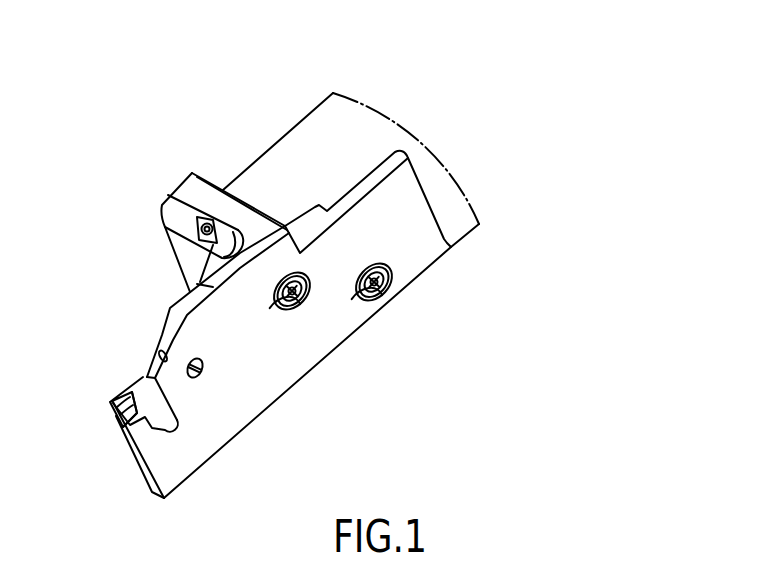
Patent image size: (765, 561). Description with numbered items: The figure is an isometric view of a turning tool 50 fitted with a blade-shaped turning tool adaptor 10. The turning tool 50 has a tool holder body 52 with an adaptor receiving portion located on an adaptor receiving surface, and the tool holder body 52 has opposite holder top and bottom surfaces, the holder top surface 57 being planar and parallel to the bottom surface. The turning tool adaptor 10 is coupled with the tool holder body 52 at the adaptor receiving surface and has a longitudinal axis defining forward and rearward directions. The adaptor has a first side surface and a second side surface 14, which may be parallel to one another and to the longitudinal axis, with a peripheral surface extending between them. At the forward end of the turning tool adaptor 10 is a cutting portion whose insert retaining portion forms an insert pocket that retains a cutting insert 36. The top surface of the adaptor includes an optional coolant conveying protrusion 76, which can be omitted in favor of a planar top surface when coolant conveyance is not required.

The turning tool adaptor 10 is at (111, 303).
The second side surface 14 is at (243, 388).
The cutting insert 36 is at (131, 392).
The turning tool 50 is at (142, 138).
The tool holder body 52 is at (302, 72).
The holder top surface 57 is at (278, 172).
The coolant conveying protrusion 76 is at (141, 291).